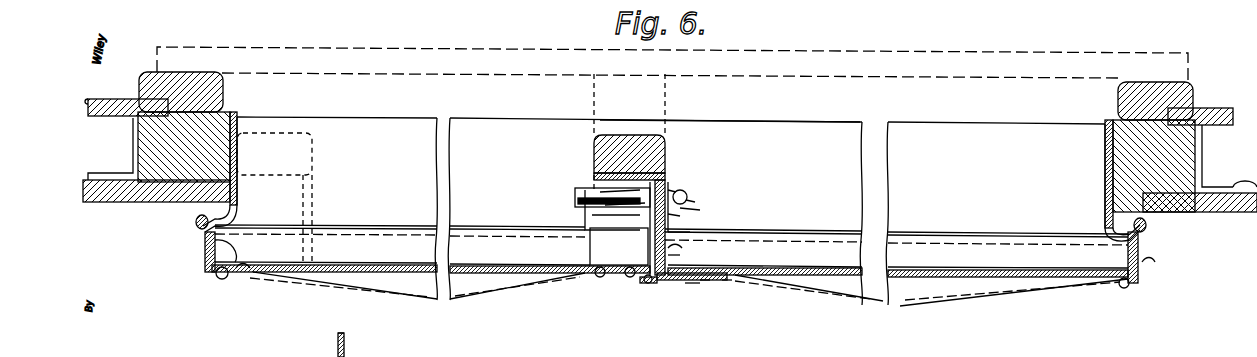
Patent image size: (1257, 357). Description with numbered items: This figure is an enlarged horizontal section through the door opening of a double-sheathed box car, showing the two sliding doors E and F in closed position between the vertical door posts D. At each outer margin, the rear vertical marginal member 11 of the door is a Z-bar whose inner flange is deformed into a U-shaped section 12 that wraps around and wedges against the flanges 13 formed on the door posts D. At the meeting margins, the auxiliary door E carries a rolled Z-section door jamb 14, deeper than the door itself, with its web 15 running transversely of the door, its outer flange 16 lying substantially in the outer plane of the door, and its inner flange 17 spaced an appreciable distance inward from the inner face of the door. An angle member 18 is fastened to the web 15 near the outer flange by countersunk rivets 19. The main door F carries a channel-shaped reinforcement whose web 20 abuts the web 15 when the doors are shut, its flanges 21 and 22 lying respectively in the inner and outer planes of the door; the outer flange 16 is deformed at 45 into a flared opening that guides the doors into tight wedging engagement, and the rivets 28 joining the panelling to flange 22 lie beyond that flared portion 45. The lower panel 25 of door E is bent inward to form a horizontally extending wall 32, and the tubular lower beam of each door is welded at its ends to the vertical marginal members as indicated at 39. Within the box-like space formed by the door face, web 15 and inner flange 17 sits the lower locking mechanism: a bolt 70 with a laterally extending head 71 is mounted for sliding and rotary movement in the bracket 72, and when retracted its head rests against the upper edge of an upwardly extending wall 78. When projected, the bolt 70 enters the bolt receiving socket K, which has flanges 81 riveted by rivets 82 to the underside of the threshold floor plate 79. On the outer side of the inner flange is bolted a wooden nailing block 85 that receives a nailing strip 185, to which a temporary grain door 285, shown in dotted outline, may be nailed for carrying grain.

The temporary lining or grain door 285 is at (505, 47).
The nailing strip 185 is at (594, 91).
The wooden nailing block 85 is at (594, 150).
The threshold floor plate 79 is at (710, 140).
The laterally extending head 71 is at (585, 190).
The flanges 81 is at (578, 197).
The bracket 72 is at (592, 220).
The inner flange 17 is at (666, 186).
The web 15 is at (668, 190).
The bolt 70 is at (690, 195).
The rivets 82 is at (688, 200).
The bolt receiving socket K is at (700, 207).
The door jamb 14 is at (672, 215).
The flange 21 is at (690, 232).
The web 20 is at (668, 256).
The weld 39 is at (236, 272).
The upwardly extending wall 78 is at (585, 270).
The countersunk rivets 19 is at (618, 273).
The angle member 18 is at (640, 276).
The outer flange 16 is at (672, 284).
The rivets 28 is at (705, 283).
The flange 22 is at (728, 283).
The flared portion 45 is at (693, 290).
The door F is at (783, 279).
The door E is at (288, 272).
The vertical door posts D is at (205, 186).
The flanges 13 is at (208, 219).
The U-shaped section 12 is at (210, 233).
The rear vertical marginal member 11 is at (214, 275).
The lower panel 25 is at (347, 336).
The horizontally extending wall 32 is at (322, 345).